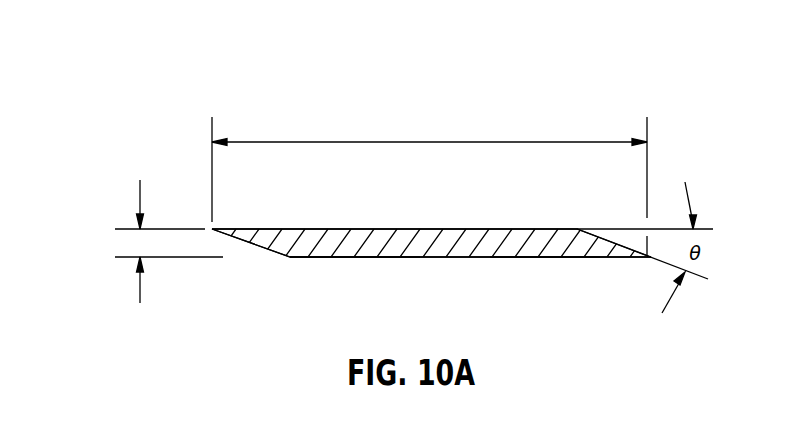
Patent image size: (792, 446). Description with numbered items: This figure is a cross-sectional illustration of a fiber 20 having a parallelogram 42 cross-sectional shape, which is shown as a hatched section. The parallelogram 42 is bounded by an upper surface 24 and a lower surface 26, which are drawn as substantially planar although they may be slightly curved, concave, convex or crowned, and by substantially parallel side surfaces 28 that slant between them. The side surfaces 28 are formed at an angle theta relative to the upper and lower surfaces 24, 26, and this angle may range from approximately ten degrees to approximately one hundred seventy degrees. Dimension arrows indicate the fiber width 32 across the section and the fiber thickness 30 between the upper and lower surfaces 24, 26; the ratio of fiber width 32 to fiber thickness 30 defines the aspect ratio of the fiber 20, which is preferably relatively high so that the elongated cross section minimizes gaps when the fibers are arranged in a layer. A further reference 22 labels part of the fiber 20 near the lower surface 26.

The fiber 20 is at (594, 258).
The second layer 22 is at (523, 258).
The upper surface 24 is at (500, 228).
The lower surface 26 is at (448, 258).
The side surfaces 28 is at (246, 242).
The fiber thickness 30 is at (139, 292).
The fiber width 32 is at (417, 141).
The parallelogram 42 is at (378, 258).